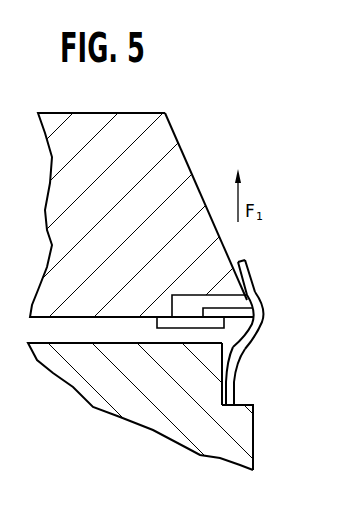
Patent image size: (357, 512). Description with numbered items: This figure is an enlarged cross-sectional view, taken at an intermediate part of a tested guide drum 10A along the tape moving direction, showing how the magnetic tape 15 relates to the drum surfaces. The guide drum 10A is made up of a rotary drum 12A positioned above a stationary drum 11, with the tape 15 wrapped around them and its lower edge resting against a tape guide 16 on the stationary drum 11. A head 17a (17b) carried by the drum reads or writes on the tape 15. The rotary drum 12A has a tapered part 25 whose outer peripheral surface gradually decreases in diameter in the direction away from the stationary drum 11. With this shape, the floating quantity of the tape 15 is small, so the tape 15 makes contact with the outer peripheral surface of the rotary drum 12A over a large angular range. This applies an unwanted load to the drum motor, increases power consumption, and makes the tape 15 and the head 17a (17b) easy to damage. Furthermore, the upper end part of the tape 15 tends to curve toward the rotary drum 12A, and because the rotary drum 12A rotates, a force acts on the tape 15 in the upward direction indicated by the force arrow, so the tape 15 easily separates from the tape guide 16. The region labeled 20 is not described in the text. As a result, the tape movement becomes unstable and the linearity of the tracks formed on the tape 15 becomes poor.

The guide drum 10A is at (139, 102).
The rotary drum 12A is at (83, 118).
The tapered part 25 is at (191, 170).
The tape 15 is at (258, 300).
The head 17a is at (259, 313).
The head 17b is at (272, 324).
The groove wall 20 is at (220, 380).
The tape guide 16 is at (242, 404).
The stationary drum 11 is at (225, 457).